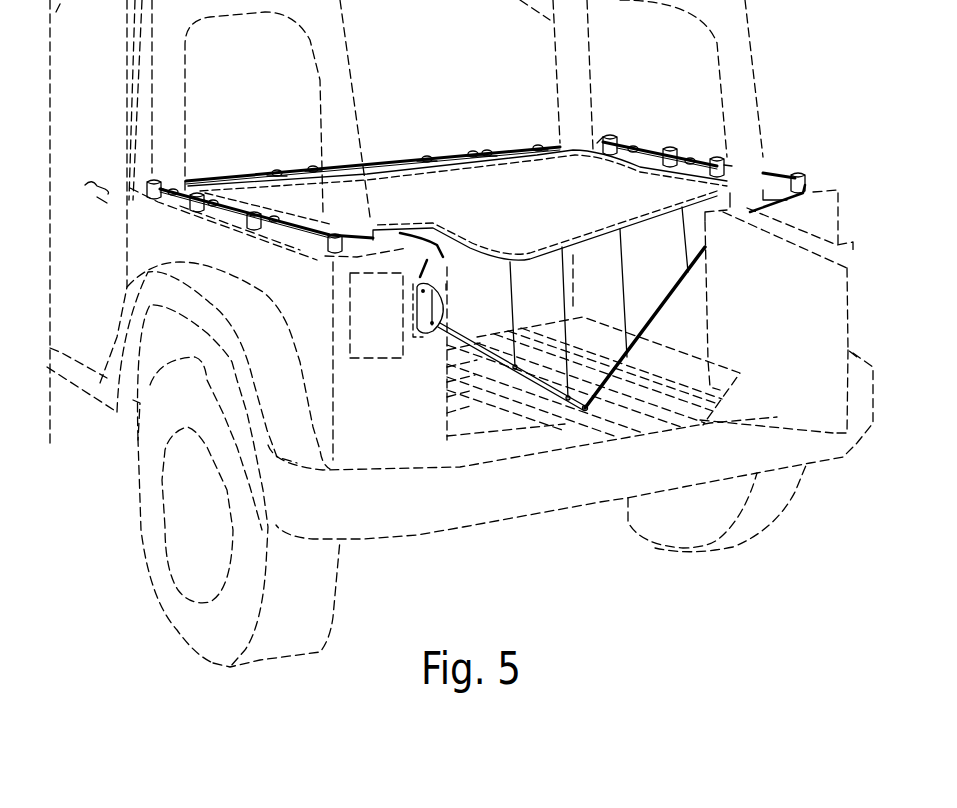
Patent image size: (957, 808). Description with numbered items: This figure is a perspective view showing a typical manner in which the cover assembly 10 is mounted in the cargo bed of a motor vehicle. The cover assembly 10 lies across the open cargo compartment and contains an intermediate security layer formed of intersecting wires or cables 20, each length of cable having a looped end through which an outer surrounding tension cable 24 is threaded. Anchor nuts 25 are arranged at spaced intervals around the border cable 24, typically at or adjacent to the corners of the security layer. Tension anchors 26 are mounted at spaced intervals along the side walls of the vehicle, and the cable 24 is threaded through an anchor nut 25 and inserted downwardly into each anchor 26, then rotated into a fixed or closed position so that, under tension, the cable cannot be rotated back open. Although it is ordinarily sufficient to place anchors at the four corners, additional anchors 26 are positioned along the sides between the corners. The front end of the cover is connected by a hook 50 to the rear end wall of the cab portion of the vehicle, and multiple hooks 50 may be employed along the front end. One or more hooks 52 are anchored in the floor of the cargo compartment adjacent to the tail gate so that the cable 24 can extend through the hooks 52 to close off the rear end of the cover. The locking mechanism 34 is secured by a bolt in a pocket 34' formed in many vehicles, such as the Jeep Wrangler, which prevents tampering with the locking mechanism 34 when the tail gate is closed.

The cover assembly 10 is at (537, 192).
The wire or cable 20 is at (219, 195).
The tension cable 24 is at (307, 234).
The anchor nut 25 is at (803, 170).
The tension anchor 26 is at (715, 157).
The hook 50 is at (313, 167).
The locking mechanism 34 is at (513, 452).
The pocket 34' is at (466, 440).
The hook 52 is at (587, 412).